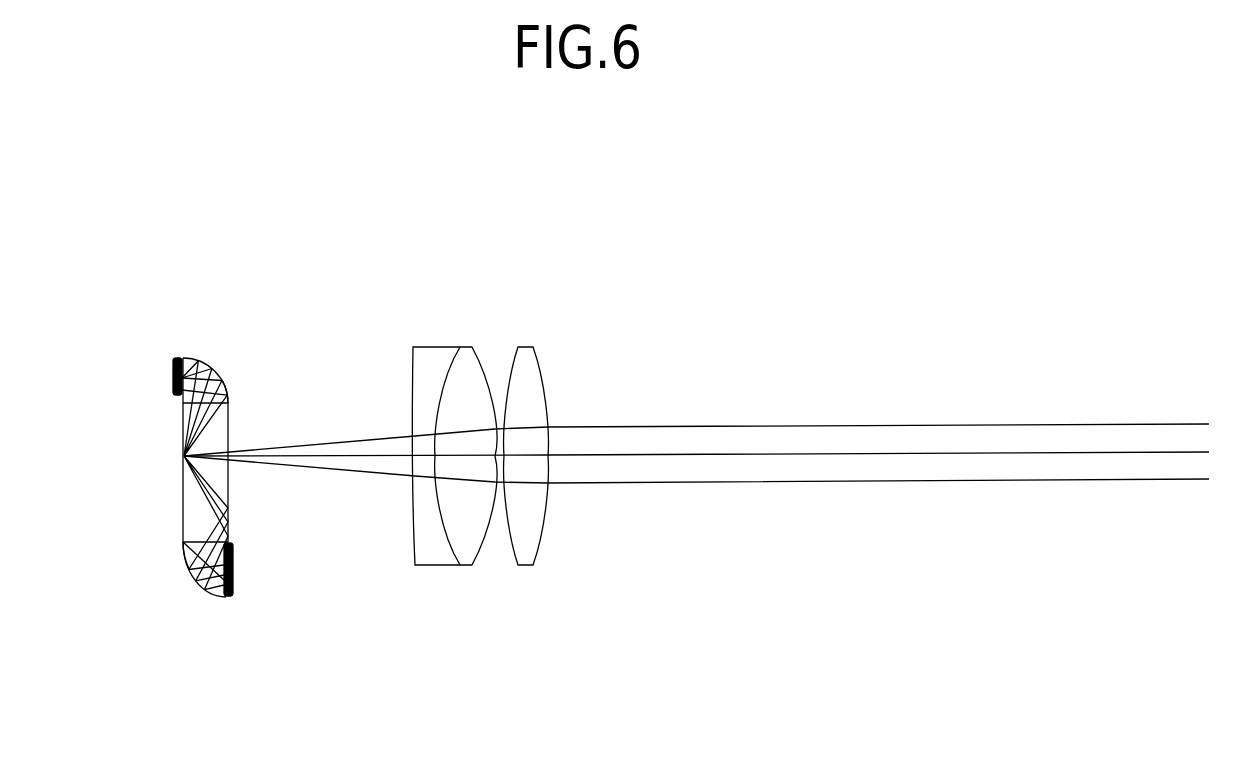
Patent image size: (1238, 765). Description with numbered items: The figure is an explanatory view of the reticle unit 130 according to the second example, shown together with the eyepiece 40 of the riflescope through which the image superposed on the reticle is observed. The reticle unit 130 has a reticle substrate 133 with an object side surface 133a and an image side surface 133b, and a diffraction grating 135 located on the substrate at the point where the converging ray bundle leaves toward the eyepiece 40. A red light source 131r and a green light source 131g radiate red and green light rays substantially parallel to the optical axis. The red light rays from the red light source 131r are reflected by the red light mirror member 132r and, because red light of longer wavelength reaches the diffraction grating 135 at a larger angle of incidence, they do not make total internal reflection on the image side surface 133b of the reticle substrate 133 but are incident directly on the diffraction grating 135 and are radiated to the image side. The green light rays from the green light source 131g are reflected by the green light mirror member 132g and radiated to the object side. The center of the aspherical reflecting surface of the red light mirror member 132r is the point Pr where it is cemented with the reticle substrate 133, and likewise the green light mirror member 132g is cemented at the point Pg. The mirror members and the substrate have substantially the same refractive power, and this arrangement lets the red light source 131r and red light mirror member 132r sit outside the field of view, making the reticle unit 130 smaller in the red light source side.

The reticle unit 130 is at (217, 327).
The red light source 131r is at (173, 376).
The green light source 131g is at (235, 568).
The red light mirror member 132r is at (200, 356).
The green light mirror member 132g is at (200, 590).
The reticle substrate 133 is at (188, 513).
The object side surface of the reticle substrate 133a is at (183, 420).
The image side surface of the reticle substrate 133b is at (233, 427).
The diffraction grating 135 is at (183, 455).
The point Pr is at (233, 403).
The point Pg is at (183, 542).
The eyepiece 40 is at (552, 593).